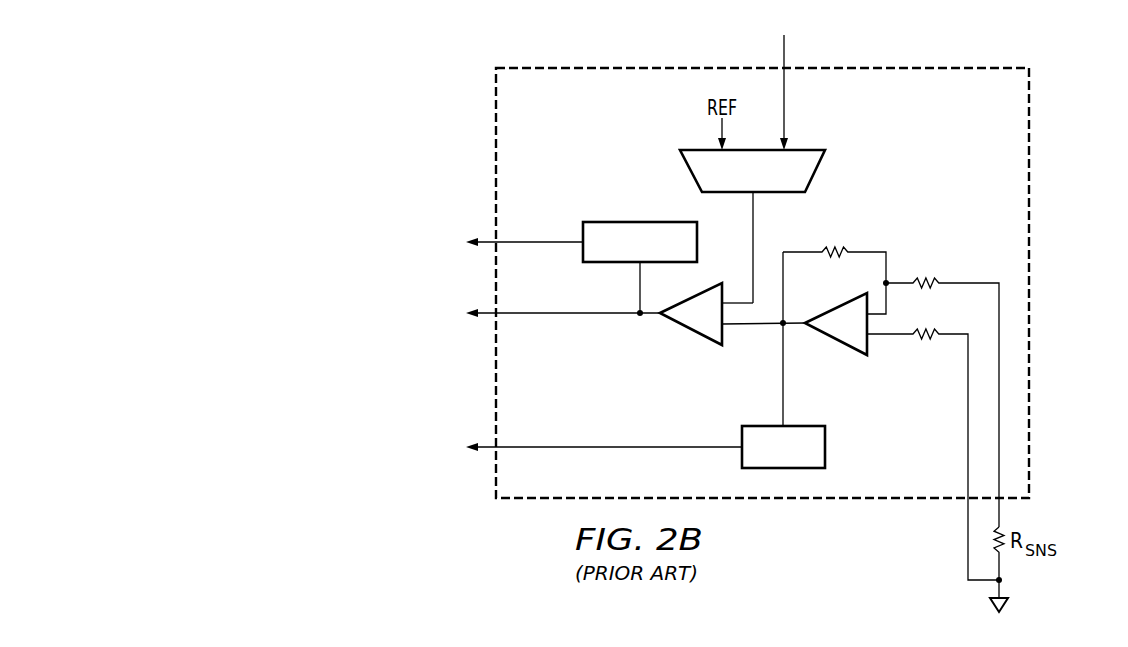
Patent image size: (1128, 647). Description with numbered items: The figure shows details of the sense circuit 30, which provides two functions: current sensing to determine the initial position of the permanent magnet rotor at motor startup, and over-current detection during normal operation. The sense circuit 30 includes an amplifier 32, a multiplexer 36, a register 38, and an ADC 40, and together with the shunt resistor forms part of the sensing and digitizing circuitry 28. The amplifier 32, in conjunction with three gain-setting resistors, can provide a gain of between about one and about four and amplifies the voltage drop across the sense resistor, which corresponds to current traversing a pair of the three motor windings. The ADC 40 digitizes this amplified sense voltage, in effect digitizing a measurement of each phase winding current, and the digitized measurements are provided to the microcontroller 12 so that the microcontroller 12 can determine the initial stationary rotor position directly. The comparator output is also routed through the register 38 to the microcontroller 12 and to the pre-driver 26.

The microcontroller 12 is at (484, 339).
The pre-driver 26 is at (478, 307).
The sensing and digitizing circuitry 28 is at (782, 80).
The sense circuit 30 is at (482, 127).
The amplifier 32 is at (833, 343).
The multiplexer 36 is at (818, 168).
The register 38 is at (633, 221).
The ADC 40 is at (825, 447).